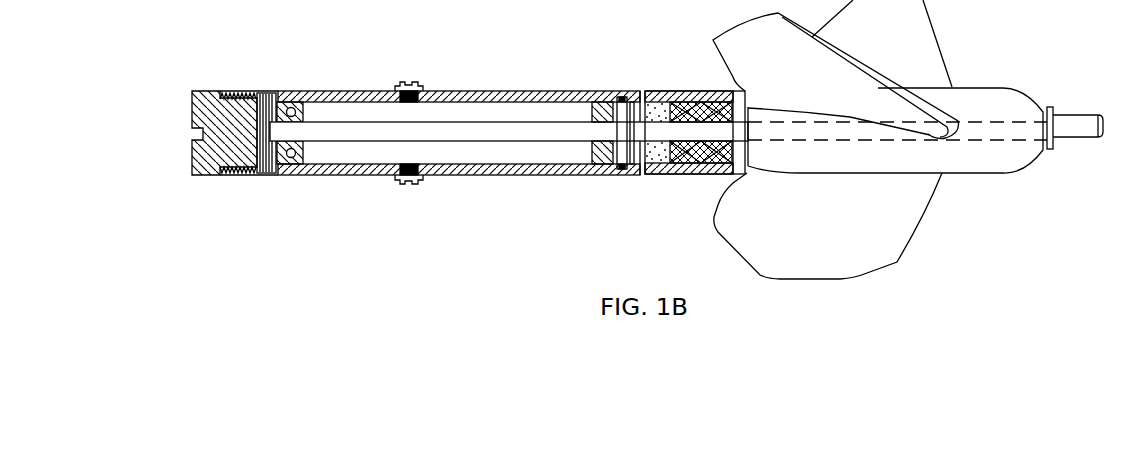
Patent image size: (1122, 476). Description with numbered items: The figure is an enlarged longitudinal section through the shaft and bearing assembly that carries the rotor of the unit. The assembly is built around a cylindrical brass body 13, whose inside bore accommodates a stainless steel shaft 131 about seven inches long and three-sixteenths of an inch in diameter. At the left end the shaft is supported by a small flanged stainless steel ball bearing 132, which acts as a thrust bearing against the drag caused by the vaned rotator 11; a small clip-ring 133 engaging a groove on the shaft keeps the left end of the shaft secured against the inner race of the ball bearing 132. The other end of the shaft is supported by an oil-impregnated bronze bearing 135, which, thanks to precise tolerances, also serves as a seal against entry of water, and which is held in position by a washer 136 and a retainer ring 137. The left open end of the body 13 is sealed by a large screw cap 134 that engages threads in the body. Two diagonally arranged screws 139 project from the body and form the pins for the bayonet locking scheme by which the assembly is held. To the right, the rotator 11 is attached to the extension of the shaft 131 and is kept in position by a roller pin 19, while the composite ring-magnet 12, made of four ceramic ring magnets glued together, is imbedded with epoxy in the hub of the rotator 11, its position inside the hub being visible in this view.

The vaned rotator 11 is at (933, 25).
The composite ring-magnet 12 is at (727, 82).
The cylindrical brass body 13 is at (323, 91).
The roller pin 19 is at (1052, 150).
The stainless steel shaft 131 is at (375, 142).
The flanged stainless steel ball bearing 132 is at (292, 164).
The clip-ring 133 is at (276, 166).
The screw cap 134 is at (212, 176).
The oil-impregnated bronze bearing 135 is at (603, 164).
The washer 136 is at (618, 169).
The retainer ring 137 is at (630, 91).
The screws 139 is at (413, 82).